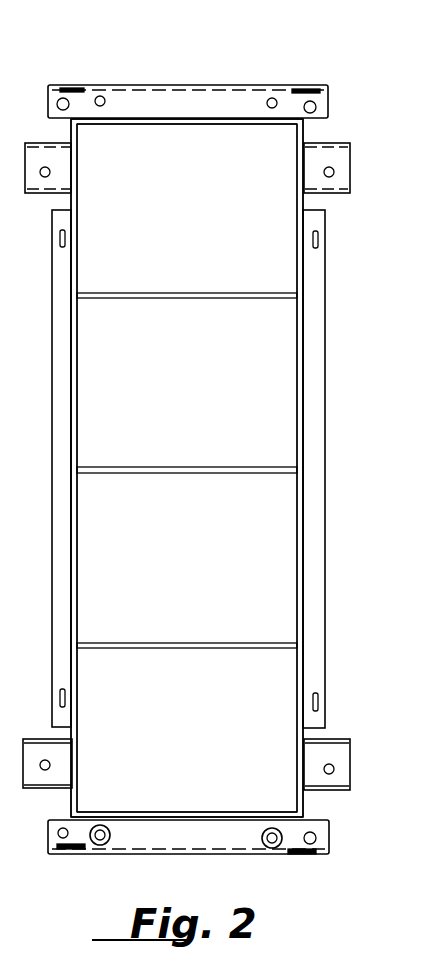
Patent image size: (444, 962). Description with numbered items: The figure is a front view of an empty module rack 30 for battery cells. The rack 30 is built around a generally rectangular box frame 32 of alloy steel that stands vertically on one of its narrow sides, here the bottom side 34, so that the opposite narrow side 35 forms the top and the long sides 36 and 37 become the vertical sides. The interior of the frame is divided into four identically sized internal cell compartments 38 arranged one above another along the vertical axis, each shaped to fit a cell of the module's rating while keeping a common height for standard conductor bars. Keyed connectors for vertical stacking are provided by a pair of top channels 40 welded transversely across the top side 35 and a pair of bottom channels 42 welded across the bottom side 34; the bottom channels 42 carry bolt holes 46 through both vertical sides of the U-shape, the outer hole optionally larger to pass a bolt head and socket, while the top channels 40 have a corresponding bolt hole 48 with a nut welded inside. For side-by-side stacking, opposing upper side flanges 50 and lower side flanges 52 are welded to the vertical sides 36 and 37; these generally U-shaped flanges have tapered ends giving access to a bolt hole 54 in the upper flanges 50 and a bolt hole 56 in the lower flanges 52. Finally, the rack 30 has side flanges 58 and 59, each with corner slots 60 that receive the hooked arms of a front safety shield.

The module rack 30 is at (203, 58).
The box frame 32 is at (192, 475).
The bottom side 34 is at (148, 817).
The top side 35 is at (143, 118).
The vertical side 36 is at (76, 382).
The vertical side 37 is at (304, 367).
The internal cell compartments 38 is at (205, 234).
The top channels 40 is at (187, 82).
The bottom channels 42 is at (186, 861).
The bolt holes 46 is at (97, 845).
The bolt hole 48 is at (98, 96).
The upper side flanges 50 is at (181, 161).
The lower side flanges 52 is at (186, 761).
The bolt hole 54 is at (45, 177).
The bolt hole 56 is at (45, 771).
The side flange 58 is at (65, 457).
The side flange 59 is at (318, 444).
The corner slots 60 is at (58, 239).